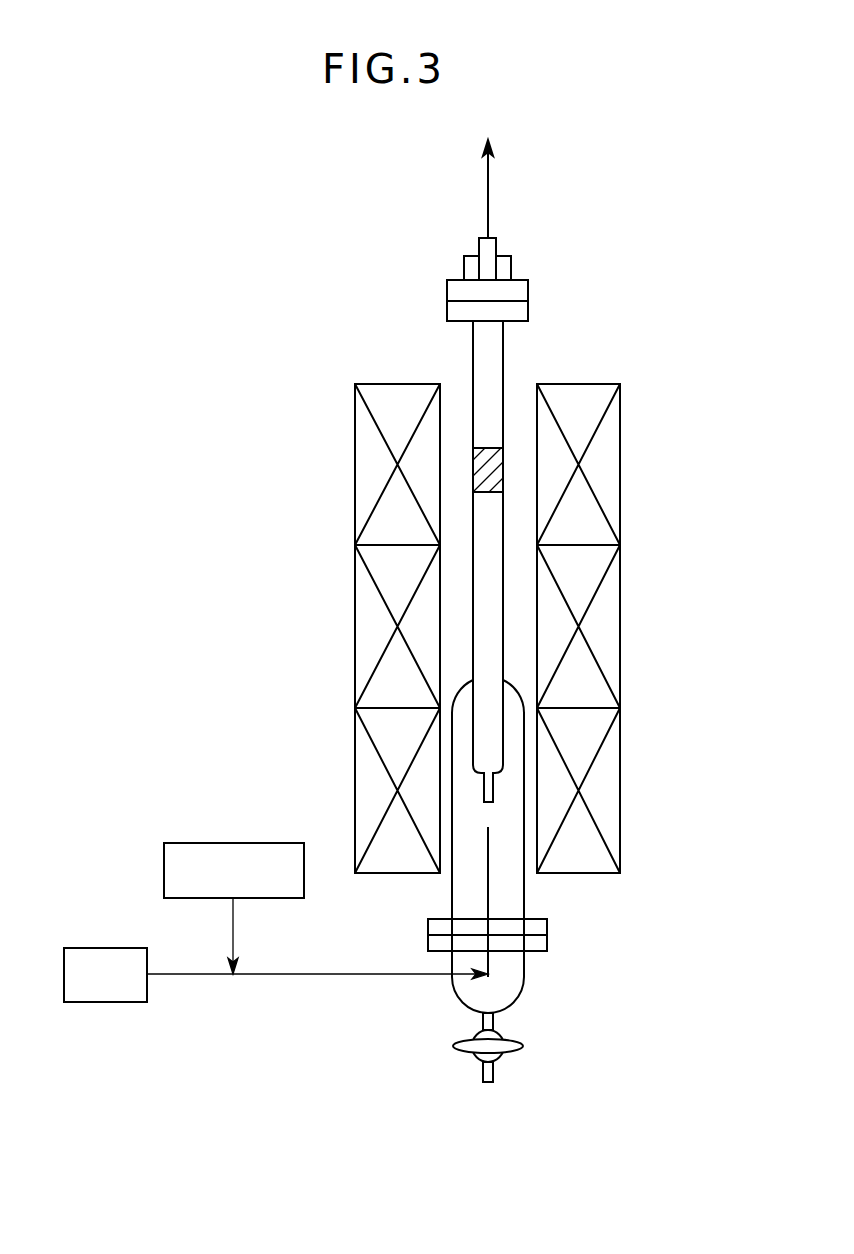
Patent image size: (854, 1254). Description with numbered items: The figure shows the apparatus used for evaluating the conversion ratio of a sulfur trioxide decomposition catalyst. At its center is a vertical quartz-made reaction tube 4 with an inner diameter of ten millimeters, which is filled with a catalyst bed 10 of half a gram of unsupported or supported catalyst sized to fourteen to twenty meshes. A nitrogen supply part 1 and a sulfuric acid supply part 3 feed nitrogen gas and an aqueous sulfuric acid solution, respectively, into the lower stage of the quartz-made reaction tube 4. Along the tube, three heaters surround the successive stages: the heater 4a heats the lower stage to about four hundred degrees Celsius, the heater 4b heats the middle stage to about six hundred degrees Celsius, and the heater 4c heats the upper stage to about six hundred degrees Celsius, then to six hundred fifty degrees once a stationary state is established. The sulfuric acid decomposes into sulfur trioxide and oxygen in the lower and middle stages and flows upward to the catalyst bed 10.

The nitrogen supply part 1 is at (108, 1002).
The sulfuric acid supply part 3 is at (268, 843).
The quartz-made reaction tube 4 is at (514, 549).
The heater 4a is at (605, 797).
The heater 4b is at (605, 630).
The heater 4c is at (605, 469).
The catalyst bed 10 is at (503, 467).